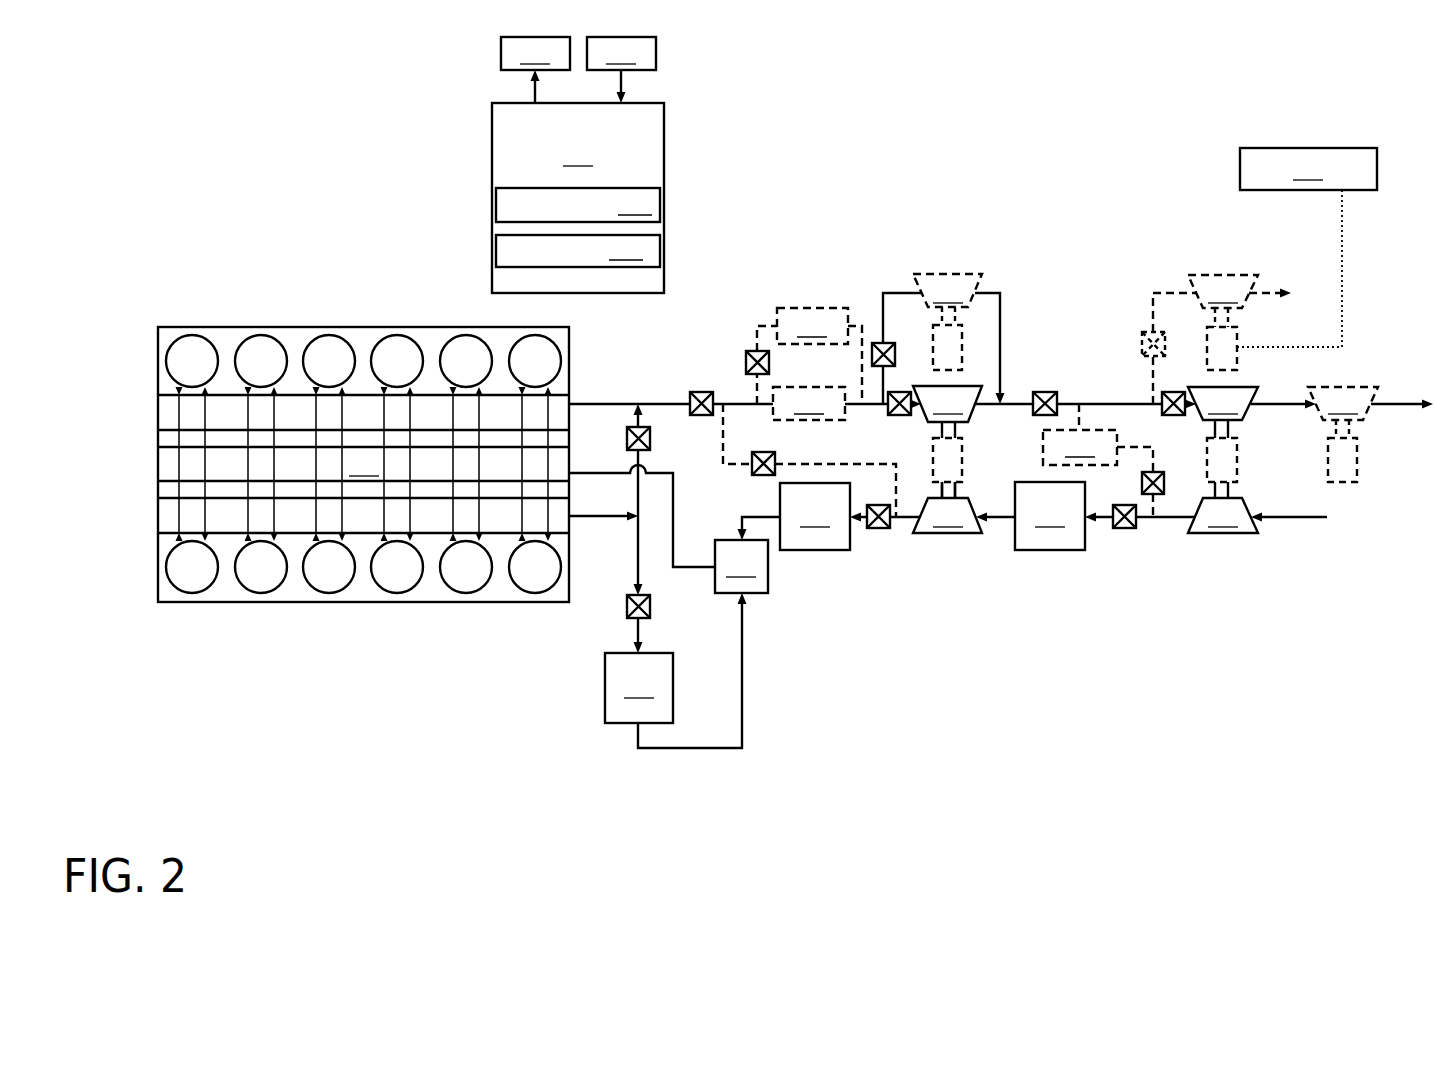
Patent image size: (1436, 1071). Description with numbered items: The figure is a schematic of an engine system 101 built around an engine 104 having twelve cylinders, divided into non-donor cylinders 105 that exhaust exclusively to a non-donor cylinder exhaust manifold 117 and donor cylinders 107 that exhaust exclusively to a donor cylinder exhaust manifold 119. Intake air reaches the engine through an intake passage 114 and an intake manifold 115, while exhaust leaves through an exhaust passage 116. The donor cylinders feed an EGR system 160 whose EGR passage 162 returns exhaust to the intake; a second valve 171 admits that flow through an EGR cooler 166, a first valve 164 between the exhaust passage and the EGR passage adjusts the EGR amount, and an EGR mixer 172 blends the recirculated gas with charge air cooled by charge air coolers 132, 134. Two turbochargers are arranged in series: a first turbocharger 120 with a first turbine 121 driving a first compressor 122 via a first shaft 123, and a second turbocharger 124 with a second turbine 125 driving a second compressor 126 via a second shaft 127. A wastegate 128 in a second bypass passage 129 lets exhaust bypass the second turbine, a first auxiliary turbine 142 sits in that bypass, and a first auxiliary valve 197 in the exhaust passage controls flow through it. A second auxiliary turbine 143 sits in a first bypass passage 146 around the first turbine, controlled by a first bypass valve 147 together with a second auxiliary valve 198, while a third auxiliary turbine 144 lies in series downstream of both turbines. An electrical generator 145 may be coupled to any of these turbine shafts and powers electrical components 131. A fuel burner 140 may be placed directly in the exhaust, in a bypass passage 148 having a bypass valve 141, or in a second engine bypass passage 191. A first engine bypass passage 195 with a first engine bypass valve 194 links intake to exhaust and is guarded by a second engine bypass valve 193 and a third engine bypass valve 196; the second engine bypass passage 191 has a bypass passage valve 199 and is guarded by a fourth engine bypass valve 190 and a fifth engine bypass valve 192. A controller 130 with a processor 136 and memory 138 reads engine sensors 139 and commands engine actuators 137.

The engine system 101 is at (819, 182).
The engine 104 is at (143, 584).
The non-donor cylinders 105 is at (330, 337).
The donor cylinders 107 is at (330, 592).
The intake passage 114 is at (1278, 520).
The intake manifold 115 is at (363, 467).
The exhaust passage 116 is at (583, 404).
The non-donor cylinder exhaust manifold 117 is at (158, 415).
The donor cylinder exhaust manifold 119 is at (158, 518).
The first turbocharger 120 is at (1240, 432).
The first turbine 121 is at (1223, 412).
The first compressor 122 is at (1223, 515).
The first shaft 123 is at (1232, 492).
The second turbocharger 124 is at (964, 433).
The second turbine 125 is at (947, 442).
The second compressor 126 is at (947, 515).
The second shaft 127 is at (955, 492).
The wastegate 128 is at (875, 345).
The second bypass passage 129 is at (899, 293).
The controller 130 is at (578, 198).
The electrical components 131 is at (1307, 247).
The charge air cooler 132 is at (1050, 516).
The charge air cooler 134 is at (794, 516).
The processor 136 is at (578, 205).
The engine actuators 137 is at (621, 70).
The memory 138 is at (578, 251).
The engine sensors 139 is at (535, 70).
The fuel burner 140 is at (945, 386).
The bypass valve 141 is at (746, 358).
The first auxiliary turbine 142 is at (947, 290).
The second auxiliary turbine 143 is at (1223, 291).
The third auxiliary turbine 144 is at (1343, 412).
The electrical generator 145 is at (1125, 396).
The first bypass passage 146 is at (1153, 293).
The first bypass valve 147 is at (1142, 343).
The bypass passage 148 is at (757, 328).
The EGR system 160 is at (691, 576).
The EGR passage 162 is at (640, 563).
The first valve 164 is at (650, 441).
The EGR cooler 166 is at (676, 670).
The second valve 171 is at (627, 610).
The EGR mixer 172 is at (741, 566).
The fourth engine bypass valve 190 is at (1126, 530).
The second engine bypass passage 191 is at (1165, 470).
The fifth engine bypass valve 192 is at (1048, 392).
The second engine bypass valve 193 is at (878, 530).
The first engine bypass valve 194 is at (770, 452).
The first engine bypass passage 195 is at (745, 467).
The third engine bypass valve 196 is at (694, 392).
The first auxiliary valve 197 is at (890, 415).
The second auxiliary valve 198 is at (1162, 410).
The bypass passage valve 199 is at (1143, 472).